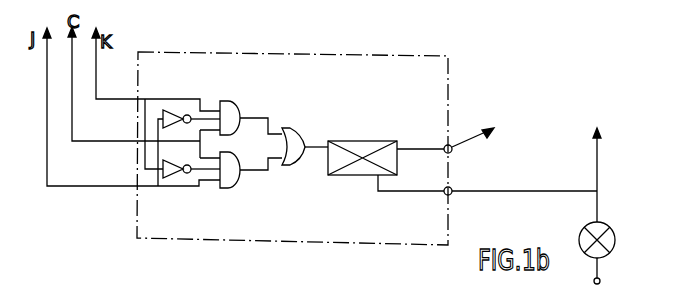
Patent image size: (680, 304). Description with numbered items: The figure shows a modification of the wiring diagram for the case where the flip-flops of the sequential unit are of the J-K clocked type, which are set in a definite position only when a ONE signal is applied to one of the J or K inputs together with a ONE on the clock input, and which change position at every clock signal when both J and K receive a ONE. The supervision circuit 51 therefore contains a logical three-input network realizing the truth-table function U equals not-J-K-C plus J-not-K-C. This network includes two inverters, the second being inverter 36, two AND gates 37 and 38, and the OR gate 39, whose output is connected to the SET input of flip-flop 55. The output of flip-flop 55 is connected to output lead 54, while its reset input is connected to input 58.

The inverter 36 is at (180, 180).
The AND gate 37 is at (244, 108).
The AND gate 38 is at (240, 183).
The OR gate 39 is at (310, 120).
The supervision circuit 51 is at (430, 101).
The output lead 54 is at (520, 181).
The flip-flop 55 is at (378, 141).
The input 58 is at (451, 146).